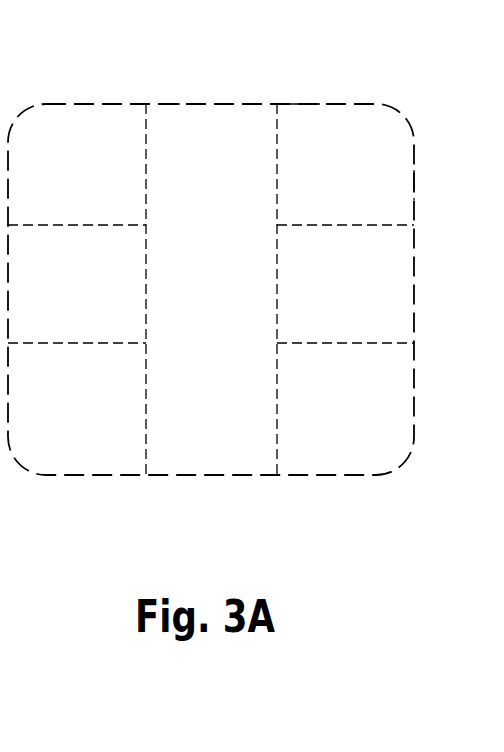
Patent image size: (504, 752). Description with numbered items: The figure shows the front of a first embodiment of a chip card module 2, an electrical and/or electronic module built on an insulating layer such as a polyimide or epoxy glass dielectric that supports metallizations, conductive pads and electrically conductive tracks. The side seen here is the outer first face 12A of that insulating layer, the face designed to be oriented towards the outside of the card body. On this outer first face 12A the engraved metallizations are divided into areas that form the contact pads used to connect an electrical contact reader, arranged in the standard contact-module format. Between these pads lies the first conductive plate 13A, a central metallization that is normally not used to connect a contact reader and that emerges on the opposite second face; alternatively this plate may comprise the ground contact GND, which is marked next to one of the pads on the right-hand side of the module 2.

The module 2 is at (318, 103).
The outer first face 12A is at (357, 121).
The first conductive plate 13A is at (185, 122).
The ground contact GND is at (363, 200).